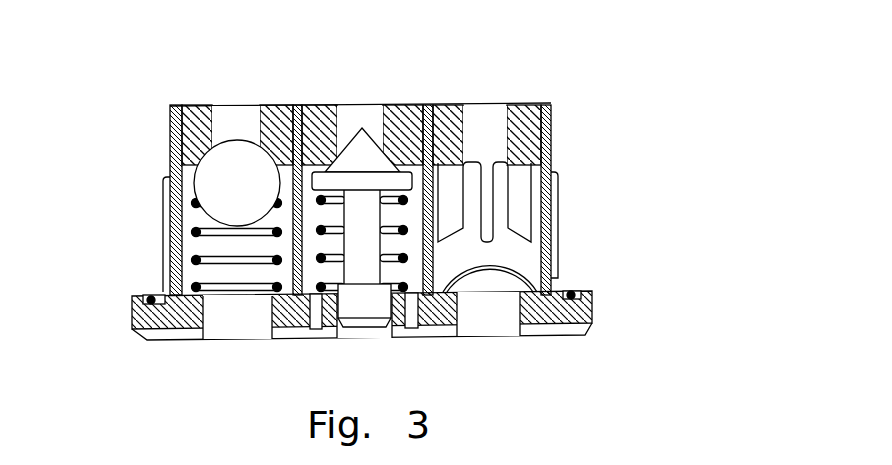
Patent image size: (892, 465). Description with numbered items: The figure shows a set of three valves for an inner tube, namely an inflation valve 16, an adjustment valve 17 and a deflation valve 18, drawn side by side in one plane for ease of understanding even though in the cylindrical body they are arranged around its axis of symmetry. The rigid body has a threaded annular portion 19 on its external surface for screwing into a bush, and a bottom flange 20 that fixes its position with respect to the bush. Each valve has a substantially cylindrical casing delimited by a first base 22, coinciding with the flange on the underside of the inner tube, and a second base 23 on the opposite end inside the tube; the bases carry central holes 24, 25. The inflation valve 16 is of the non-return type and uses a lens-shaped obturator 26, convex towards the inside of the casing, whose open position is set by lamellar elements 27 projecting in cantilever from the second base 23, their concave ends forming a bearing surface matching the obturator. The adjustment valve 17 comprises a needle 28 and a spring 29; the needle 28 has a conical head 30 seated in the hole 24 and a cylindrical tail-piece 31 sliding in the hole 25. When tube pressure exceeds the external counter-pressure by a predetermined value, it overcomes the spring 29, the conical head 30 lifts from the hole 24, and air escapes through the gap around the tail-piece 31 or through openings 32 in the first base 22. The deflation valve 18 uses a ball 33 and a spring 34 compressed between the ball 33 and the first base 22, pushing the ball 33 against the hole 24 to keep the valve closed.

The inflation valve 16 is at (486, 92).
The adjustment valve 17 is at (360, 92).
The deflation valve 18 is at (246, 92).
The annular portion 19 is at (556, 197).
The bottom flange 20 is at (592, 307).
The first base 22 is at (173, 322).
The second base 23 is at (405, 115).
The central hole 24 is at (243, 107).
The central hole 25 is at (235, 322).
The lens-shaped obturator 26 is at (508, 267).
The lamellar elements 27 is at (520, 170).
The needle 28 is at (362, 245).
The spring 29 is at (390, 258).
The conical head 30 is at (322, 107).
The cylindrical tail-piece 31 is at (360, 305).
The openings 32 is at (315, 322).
The ball 33 is at (237, 185).
The spring 34 is at (195, 232).